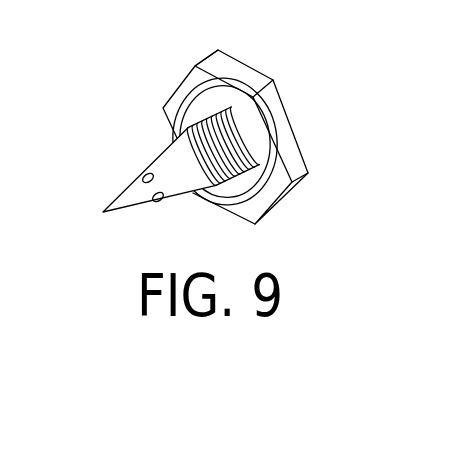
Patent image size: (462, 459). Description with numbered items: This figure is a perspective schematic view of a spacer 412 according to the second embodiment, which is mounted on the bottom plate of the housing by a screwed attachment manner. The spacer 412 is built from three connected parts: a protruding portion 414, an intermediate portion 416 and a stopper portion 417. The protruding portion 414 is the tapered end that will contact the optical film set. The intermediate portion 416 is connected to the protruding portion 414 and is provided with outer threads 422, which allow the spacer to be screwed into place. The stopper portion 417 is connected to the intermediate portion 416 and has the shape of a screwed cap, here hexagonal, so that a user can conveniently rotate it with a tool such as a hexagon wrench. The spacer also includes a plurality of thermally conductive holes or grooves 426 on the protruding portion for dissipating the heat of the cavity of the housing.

The spacer 412 is at (225, 140).
The protruding portion 414 is at (130, 190).
The intermediate portion 416 is at (188, 108).
The stopper portion 417 is at (242, 68).
The outer threads 422 is at (265, 174).
The orifice 426 is at (158, 201).